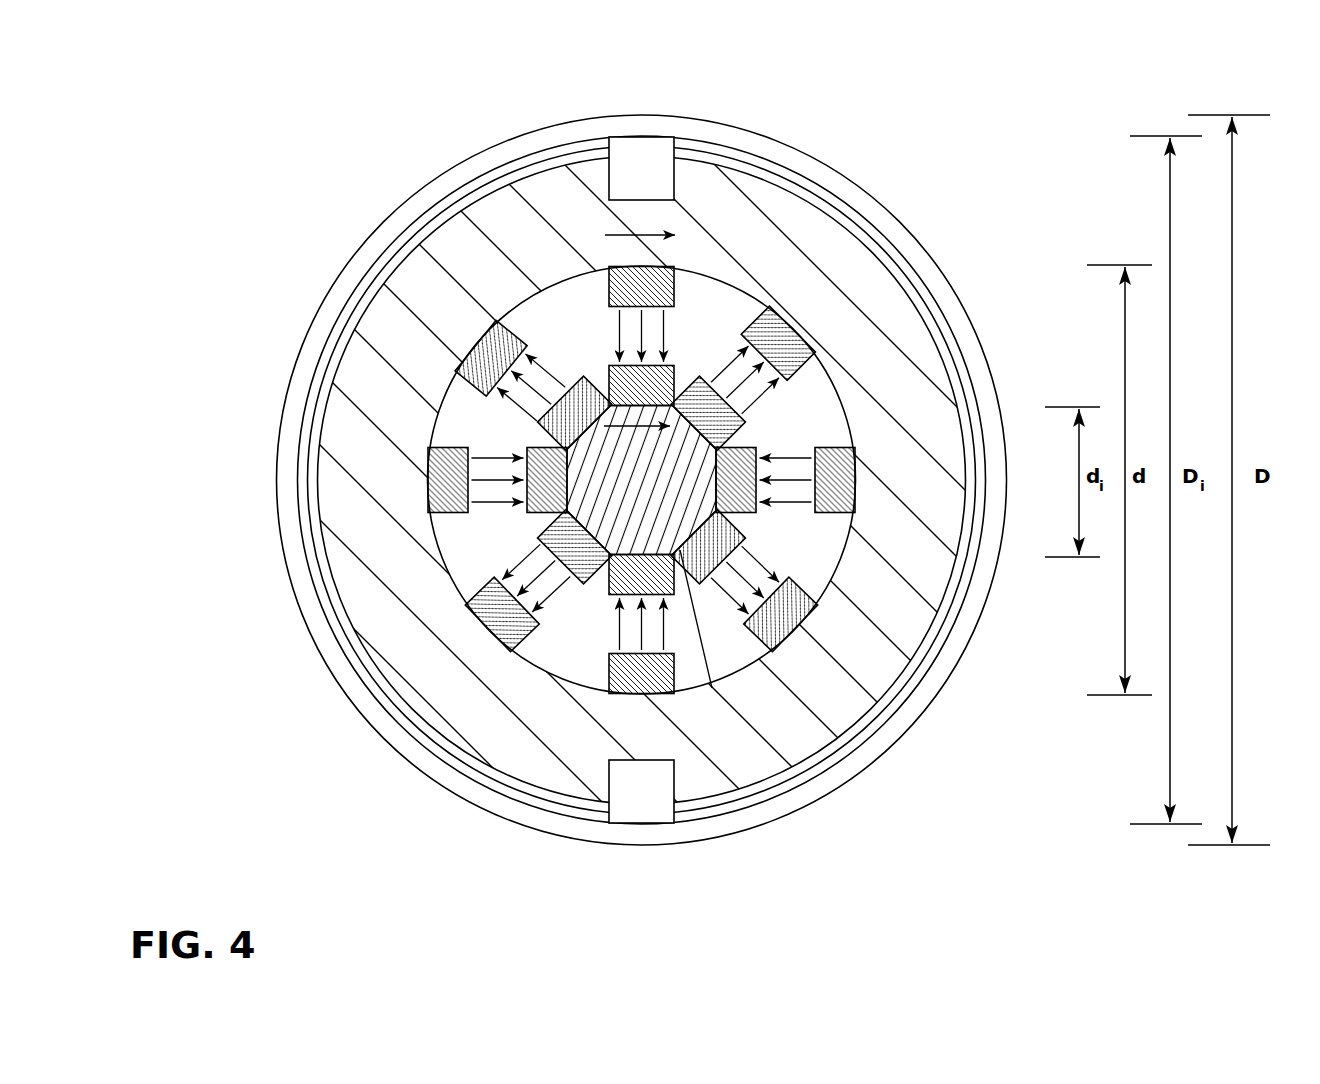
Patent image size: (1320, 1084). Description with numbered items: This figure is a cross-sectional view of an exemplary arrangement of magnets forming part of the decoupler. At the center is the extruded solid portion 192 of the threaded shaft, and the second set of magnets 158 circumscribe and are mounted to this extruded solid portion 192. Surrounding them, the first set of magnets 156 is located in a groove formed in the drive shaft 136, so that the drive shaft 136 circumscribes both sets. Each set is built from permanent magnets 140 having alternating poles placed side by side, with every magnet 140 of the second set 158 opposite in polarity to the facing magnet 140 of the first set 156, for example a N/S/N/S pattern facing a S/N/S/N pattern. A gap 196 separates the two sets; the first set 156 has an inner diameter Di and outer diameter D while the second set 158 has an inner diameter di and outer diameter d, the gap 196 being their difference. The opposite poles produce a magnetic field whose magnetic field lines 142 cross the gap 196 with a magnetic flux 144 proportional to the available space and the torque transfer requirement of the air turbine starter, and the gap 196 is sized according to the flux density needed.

The drive shaft 136 is at (848, 195).
The permanent magnet 140 is at (680, 268).
The magnetic field lines 142 is at (488, 452).
The magnetic flux 144 is at (553, 378).
The first set of magnets 156 is at (804, 327).
The second set of magnets 158 is at (779, 513).
The extruded solid portion 192 is at (670, 517).
The gap 196 is at (589, 642).